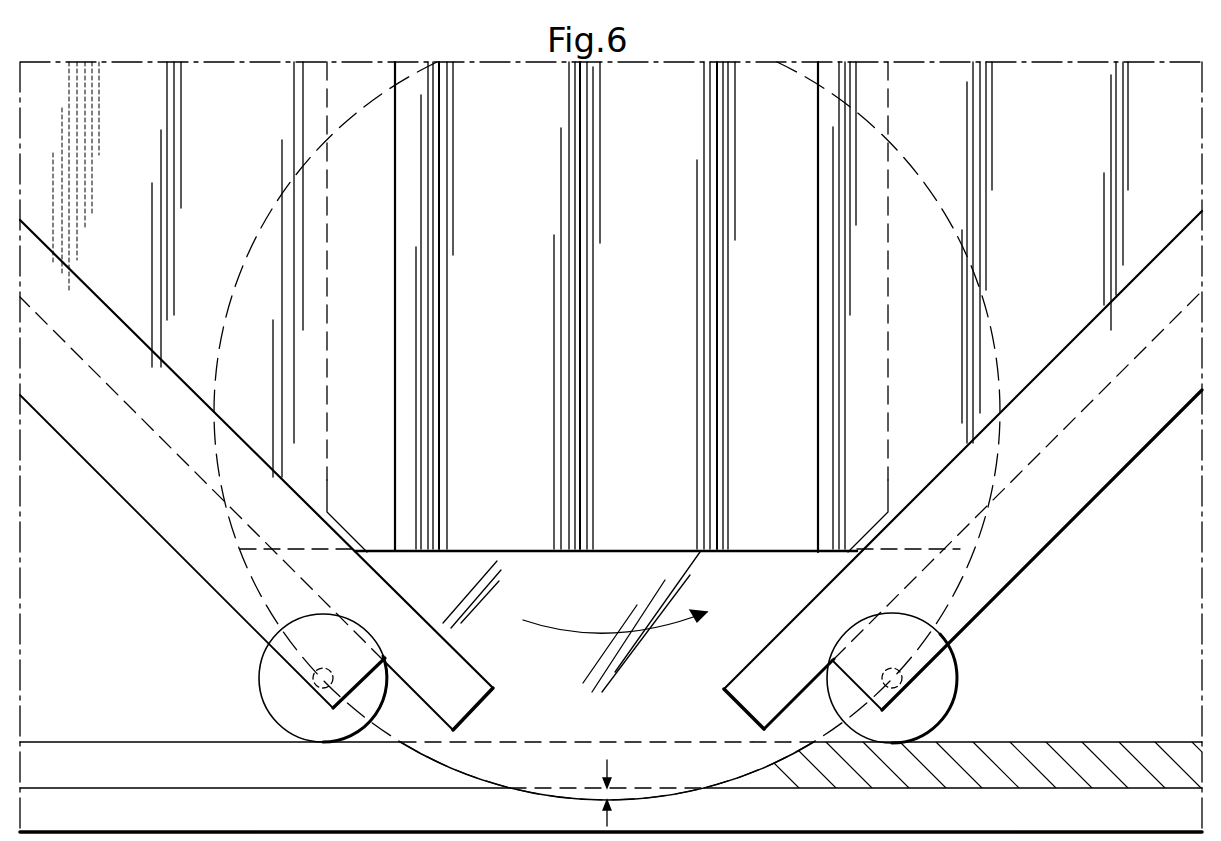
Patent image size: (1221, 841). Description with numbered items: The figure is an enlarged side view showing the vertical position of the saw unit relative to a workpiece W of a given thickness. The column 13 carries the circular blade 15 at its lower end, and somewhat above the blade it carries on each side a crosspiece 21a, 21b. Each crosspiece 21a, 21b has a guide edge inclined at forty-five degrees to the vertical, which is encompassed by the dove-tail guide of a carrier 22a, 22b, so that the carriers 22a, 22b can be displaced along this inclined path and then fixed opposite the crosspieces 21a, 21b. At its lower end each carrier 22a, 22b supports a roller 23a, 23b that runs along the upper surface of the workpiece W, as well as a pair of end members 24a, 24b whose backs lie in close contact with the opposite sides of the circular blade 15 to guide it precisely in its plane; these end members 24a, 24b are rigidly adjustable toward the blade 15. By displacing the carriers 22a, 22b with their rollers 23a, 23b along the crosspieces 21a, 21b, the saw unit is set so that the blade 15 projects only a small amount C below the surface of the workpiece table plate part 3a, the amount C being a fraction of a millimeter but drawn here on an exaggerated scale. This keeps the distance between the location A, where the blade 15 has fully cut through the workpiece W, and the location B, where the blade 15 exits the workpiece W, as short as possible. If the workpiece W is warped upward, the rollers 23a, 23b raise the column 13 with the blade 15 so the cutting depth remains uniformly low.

The column 13 is at (418, 258).
The circular blade 15 is at (573, 603).
The crosspiece 21a is at (248, 417).
The carrier 22a is at (197, 547).
The roller 23a is at (275, 692).
The end members 24a is at (467, 697).
The crosspiece 21b is at (965, 432).
The carrier 22b is at (1003, 563).
The roller 23b is at (933, 701).
The end members 24b is at (747, 695).
The part of the workpiece table plate 3a is at (90, 800).
The workpiece W is at (1097, 763).
The location at which the saw blade has fully cut through the workpiece A is at (405, 745).
The location at which the saw blade exits from the workpiece B is at (808, 742).
The amount of projection C is at (607, 792).